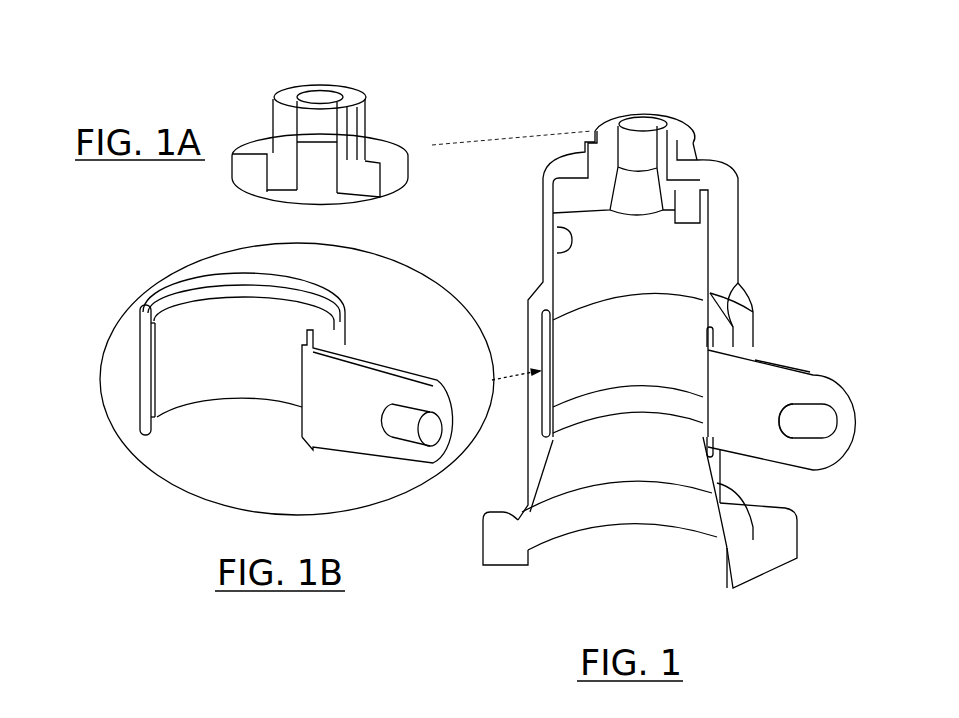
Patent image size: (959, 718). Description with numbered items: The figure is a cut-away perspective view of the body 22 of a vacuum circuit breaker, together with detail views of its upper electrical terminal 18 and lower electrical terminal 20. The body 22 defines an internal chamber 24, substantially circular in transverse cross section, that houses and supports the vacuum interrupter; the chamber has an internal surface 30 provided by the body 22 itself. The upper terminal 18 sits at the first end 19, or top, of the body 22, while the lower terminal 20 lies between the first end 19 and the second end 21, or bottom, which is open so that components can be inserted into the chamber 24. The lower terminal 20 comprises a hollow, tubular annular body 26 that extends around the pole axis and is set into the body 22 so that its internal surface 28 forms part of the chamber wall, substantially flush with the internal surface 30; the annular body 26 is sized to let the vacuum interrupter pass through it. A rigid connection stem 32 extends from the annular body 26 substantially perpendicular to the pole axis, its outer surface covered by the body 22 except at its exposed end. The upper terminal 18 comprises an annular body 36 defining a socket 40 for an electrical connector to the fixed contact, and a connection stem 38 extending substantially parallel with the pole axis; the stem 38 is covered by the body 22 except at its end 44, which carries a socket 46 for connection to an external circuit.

In FIG. 1A, the upper electrical terminal 18 is at (374, 108).
In FIG. 1, the upper electrical terminal 18 is at (667, 153).
In FIG. 1, the first end 19 is at (727, 170).
In FIG. 1B, the lower electrical terminal 20 is at (140, 383).
In FIG. 1, the lower electrical terminal 20 is at (581, 312).
In FIG. 1, the second end 21 is at (493, 543).
In FIG. 1, the body 22 is at (740, 223).
In FIG. 1, the internal chamber 24 is at (652, 277).
In FIG. 1B, the annular body 26 is at (142, 342).
In FIG. 1, the annular body 26 is at (678, 317).
In FIG. 1B, the internal surface 28 is at (236, 362).
In FIG. 1, the internal surface 28 is at (652, 362).
In FIG. 1, the internal surface 30 is at (556, 233).
In FIG. 1B, the connection stem 32 is at (371, 383).
In FIG. 1, the connection stem 32 is at (838, 408).
In FIG. 1A, the body 36 is at (393, 148).
In FIG. 1A, the connection stem 38 is at (278, 113).
In FIG. 1A, the socket 40 is at (305, 185).
In FIG. 1, the end 44 is at (677, 120).
In FIG. 1A, the socket 46 is at (317, 103).